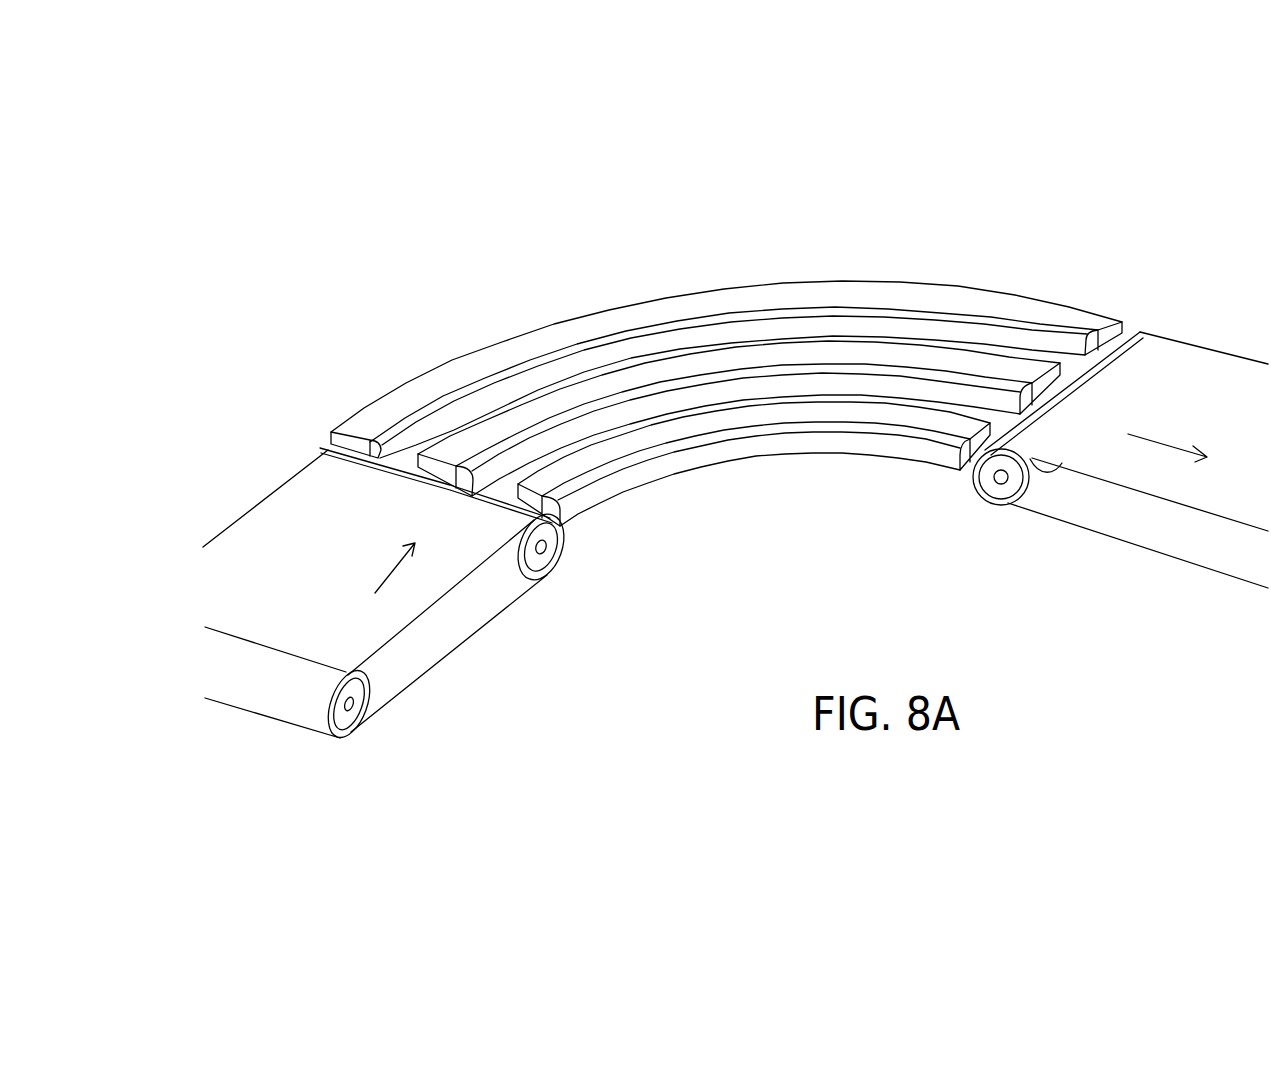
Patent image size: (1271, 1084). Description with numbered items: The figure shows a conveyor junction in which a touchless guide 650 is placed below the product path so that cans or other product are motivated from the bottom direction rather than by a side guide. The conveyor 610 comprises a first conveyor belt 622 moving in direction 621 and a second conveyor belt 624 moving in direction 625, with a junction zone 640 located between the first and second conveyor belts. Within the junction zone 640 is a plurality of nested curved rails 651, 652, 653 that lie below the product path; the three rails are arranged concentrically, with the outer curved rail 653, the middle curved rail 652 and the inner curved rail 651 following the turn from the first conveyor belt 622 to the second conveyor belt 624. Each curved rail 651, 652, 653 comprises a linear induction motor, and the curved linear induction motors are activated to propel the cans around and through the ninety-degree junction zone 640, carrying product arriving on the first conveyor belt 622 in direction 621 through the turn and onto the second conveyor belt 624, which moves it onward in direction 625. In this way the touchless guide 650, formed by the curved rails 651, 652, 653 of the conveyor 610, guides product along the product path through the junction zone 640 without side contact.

The conveyor 610 is at (588, 188).
The direction 621 is at (362, 588).
The first conveyor belt 622 is at (300, 483).
The second conveyor belt 624 is at (1176, 350).
The direction 625 is at (1150, 446).
The junction zone 640 is at (942, 492).
The touchless guide 650 is at (710, 473).
The curved rail 651 is at (745, 448).
The curved rail 652 is at (966, 368).
The curved rail 653 is at (832, 300).